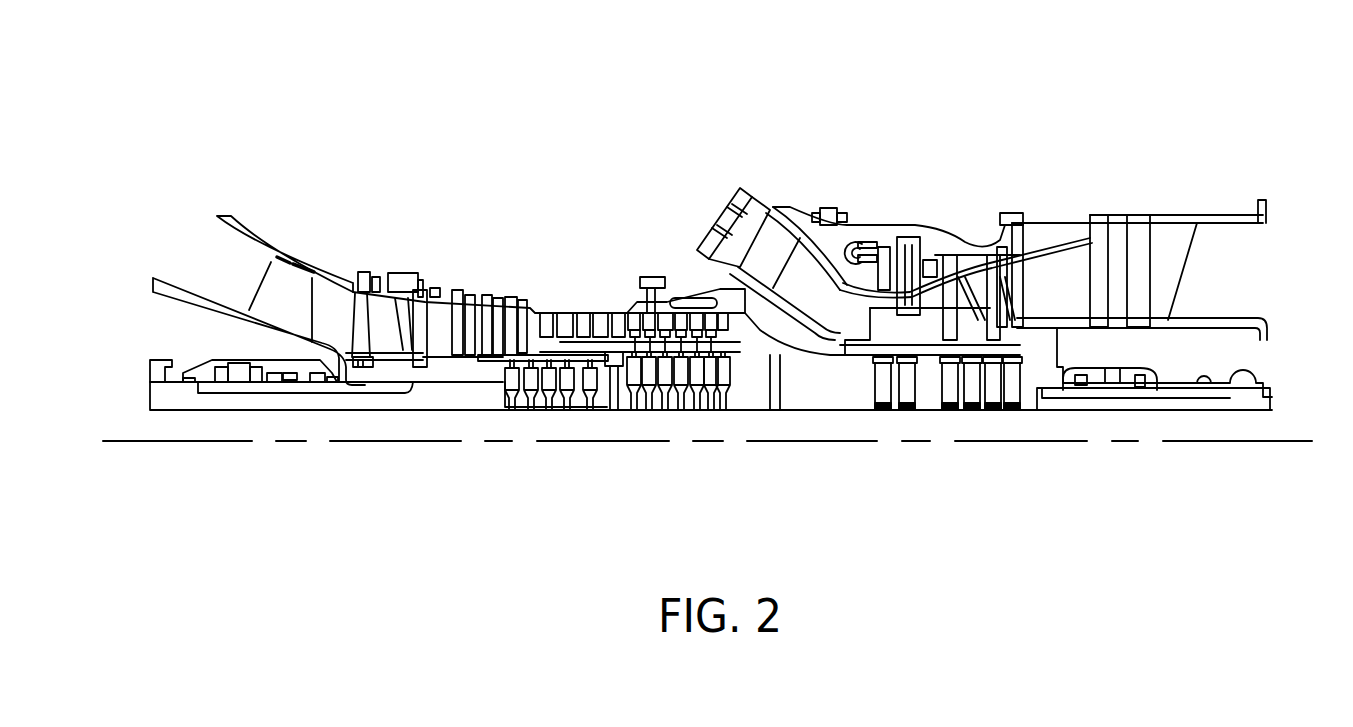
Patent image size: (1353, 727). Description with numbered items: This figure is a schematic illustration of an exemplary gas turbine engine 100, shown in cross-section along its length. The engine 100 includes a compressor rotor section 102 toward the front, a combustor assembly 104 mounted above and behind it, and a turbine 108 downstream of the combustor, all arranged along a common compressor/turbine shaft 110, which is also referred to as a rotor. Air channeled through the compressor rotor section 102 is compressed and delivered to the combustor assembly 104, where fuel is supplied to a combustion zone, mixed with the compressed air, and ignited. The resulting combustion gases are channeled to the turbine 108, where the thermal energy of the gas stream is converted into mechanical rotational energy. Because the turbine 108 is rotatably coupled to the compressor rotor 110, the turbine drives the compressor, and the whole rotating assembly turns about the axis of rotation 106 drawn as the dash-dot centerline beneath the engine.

The gas turbine engine 100 is at (370, 92).
The compressor rotor section 102 is at (485, 300).
The combustor assembly 104 is at (810, 165).
The axis of rotation 106 is at (907, 445).
The turbine 108 is at (957, 245).
The common compressor/turbine shaft 110 is at (536, 415).